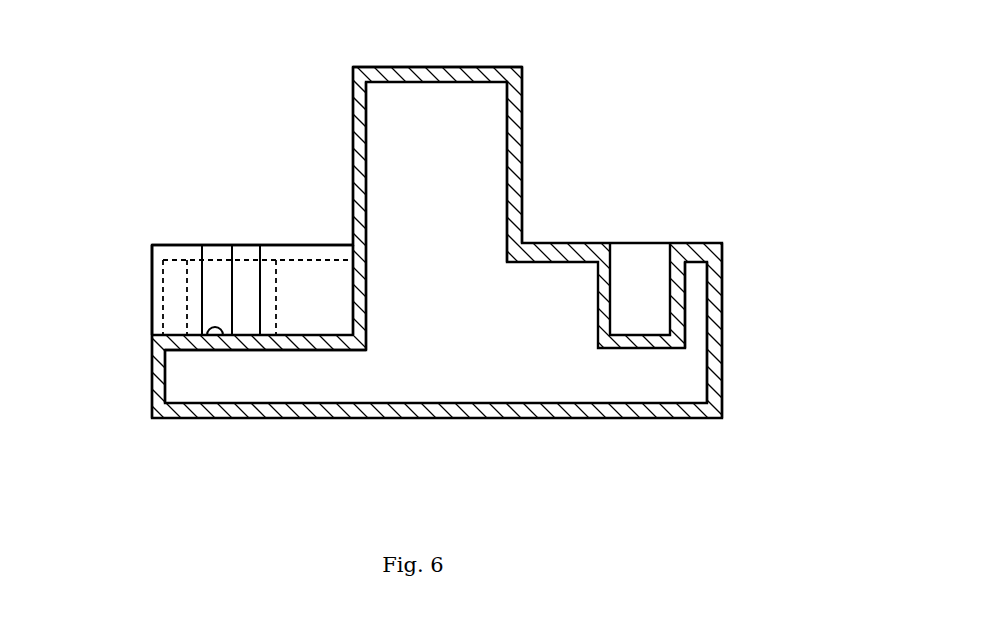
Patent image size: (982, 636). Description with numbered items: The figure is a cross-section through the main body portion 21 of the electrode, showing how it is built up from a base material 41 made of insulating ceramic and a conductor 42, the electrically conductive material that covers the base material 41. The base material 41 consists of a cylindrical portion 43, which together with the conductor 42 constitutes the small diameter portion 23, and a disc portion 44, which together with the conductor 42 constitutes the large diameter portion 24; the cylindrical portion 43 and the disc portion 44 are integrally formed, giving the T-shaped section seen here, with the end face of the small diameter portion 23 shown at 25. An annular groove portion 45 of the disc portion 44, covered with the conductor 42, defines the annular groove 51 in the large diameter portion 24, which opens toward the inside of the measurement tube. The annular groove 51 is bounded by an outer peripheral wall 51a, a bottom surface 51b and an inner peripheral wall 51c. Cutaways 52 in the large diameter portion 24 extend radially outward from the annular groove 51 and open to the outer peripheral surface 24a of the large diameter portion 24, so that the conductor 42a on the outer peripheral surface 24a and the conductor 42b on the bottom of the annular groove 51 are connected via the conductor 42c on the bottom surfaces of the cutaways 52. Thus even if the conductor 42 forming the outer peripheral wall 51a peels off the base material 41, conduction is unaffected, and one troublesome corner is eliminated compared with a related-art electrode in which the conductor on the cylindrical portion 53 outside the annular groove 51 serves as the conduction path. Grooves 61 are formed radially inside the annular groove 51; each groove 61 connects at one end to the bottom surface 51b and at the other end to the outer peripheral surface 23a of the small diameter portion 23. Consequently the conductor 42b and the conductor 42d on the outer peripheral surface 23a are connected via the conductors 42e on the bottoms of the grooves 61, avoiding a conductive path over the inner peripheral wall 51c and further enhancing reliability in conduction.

The main body portion 21 is at (541, 73).
The small diameter portion 23 is at (522, 166).
The outer peripheral surface of the small diameter portion 23a is at (353, 84).
The large diameter portion 24 is at (722, 349).
The outer peripheral surface of the large diameter portion 24a is at (153, 360).
The top surface 25 is at (469, 67).
The base material 41 is at (512, 117).
The conductor 42 is at (523, 133).
The conductor corresponding to the outer peripheral surface of the large diameter po 42a is at (158, 395).
The conductor corresponding to the bottom surface of the annular groove 42b is at (258, 340).
The conductor corresponding to bottom surfaces of the cutaways 42c is at (172, 343).
The conductor corresponding to the outer peripheral surface of the small diameter po 42d is at (353, 152).
The conductors corresponding to bottom surfaces of the grooves 42e is at (336, 343).
The cylindrical portion 43 is at (463, 202).
The disc portion 44 is at (678, 380).
The annular groove portion 45 is at (648, 335).
The annular groove 51 is at (232, 245).
The outer peripheral wall of the annular groove 51a is at (219, 285).
The bottom surface of the annular groove 51b is at (205, 337).
The inner peripheral wall of the annular groove 51c is at (252, 292).
The cutaways 52 is at (181, 281).
The cylindrical portion outside the annular groove 53 is at (136, 242).
The grooves 61 is at (297, 333).